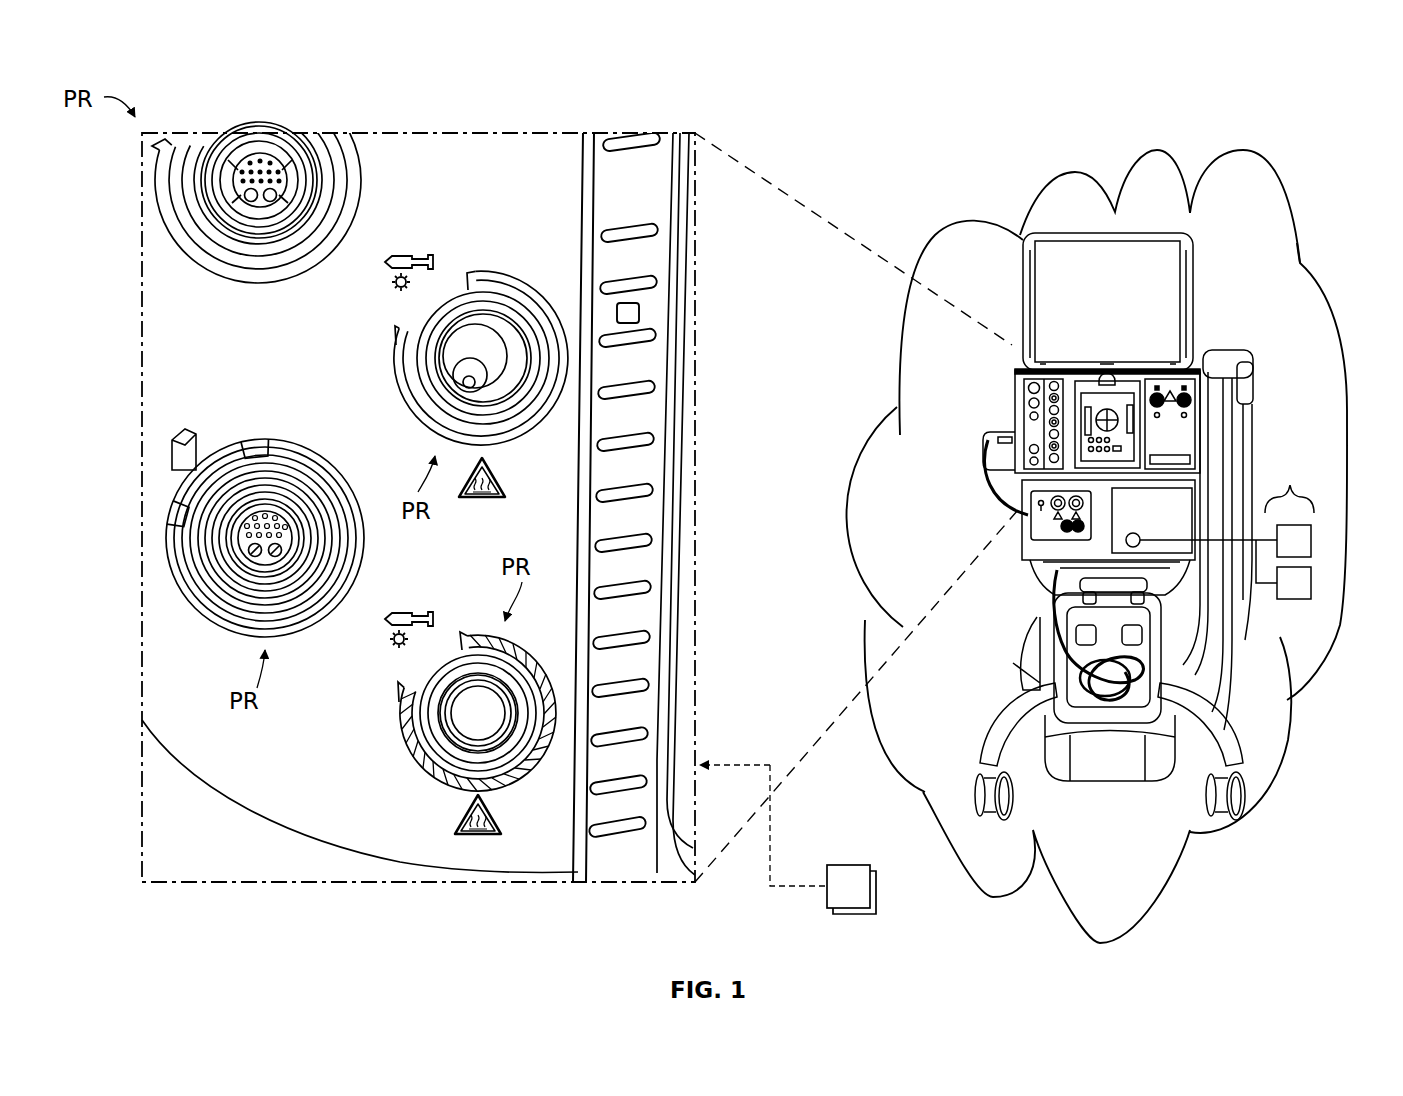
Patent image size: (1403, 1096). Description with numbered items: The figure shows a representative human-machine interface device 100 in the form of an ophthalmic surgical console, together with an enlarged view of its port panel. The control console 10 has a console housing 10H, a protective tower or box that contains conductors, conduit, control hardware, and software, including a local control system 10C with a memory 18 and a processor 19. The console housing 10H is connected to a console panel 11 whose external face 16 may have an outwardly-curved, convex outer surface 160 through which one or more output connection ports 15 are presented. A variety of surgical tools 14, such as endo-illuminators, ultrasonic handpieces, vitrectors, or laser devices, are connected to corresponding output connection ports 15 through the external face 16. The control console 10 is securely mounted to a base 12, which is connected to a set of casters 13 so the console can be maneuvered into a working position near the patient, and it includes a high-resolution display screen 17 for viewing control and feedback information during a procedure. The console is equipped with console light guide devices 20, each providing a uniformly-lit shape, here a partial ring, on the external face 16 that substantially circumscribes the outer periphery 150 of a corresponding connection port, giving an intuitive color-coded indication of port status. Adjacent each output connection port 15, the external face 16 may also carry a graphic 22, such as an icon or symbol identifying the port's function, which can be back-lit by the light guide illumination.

The control console 10 is at (1042, 493).
The local control system 10C is at (1266, 529).
The console housing 10H is at (1028, 541).
The console panel 11 is at (1022, 414).
The base 12 is at (1112, 760).
The casters 13 is at (998, 814).
The surgical tools 14 is at (811, 859).
The output connection ports 15 is at (243, 140).
The external face 16 is at (498, 142).
The display screen 17 is at (1120, 258).
The memory 18 is at (1311, 569).
The processor 19 is at (1311, 527).
The console light guide device 20 is at (182, 249).
The graphic 22 is at (172, 464).
The human-machine interface device 100 is at (1280, 183).
The outer periphery 150 is at (325, 137).
The outer surface 160 is at (197, 778).